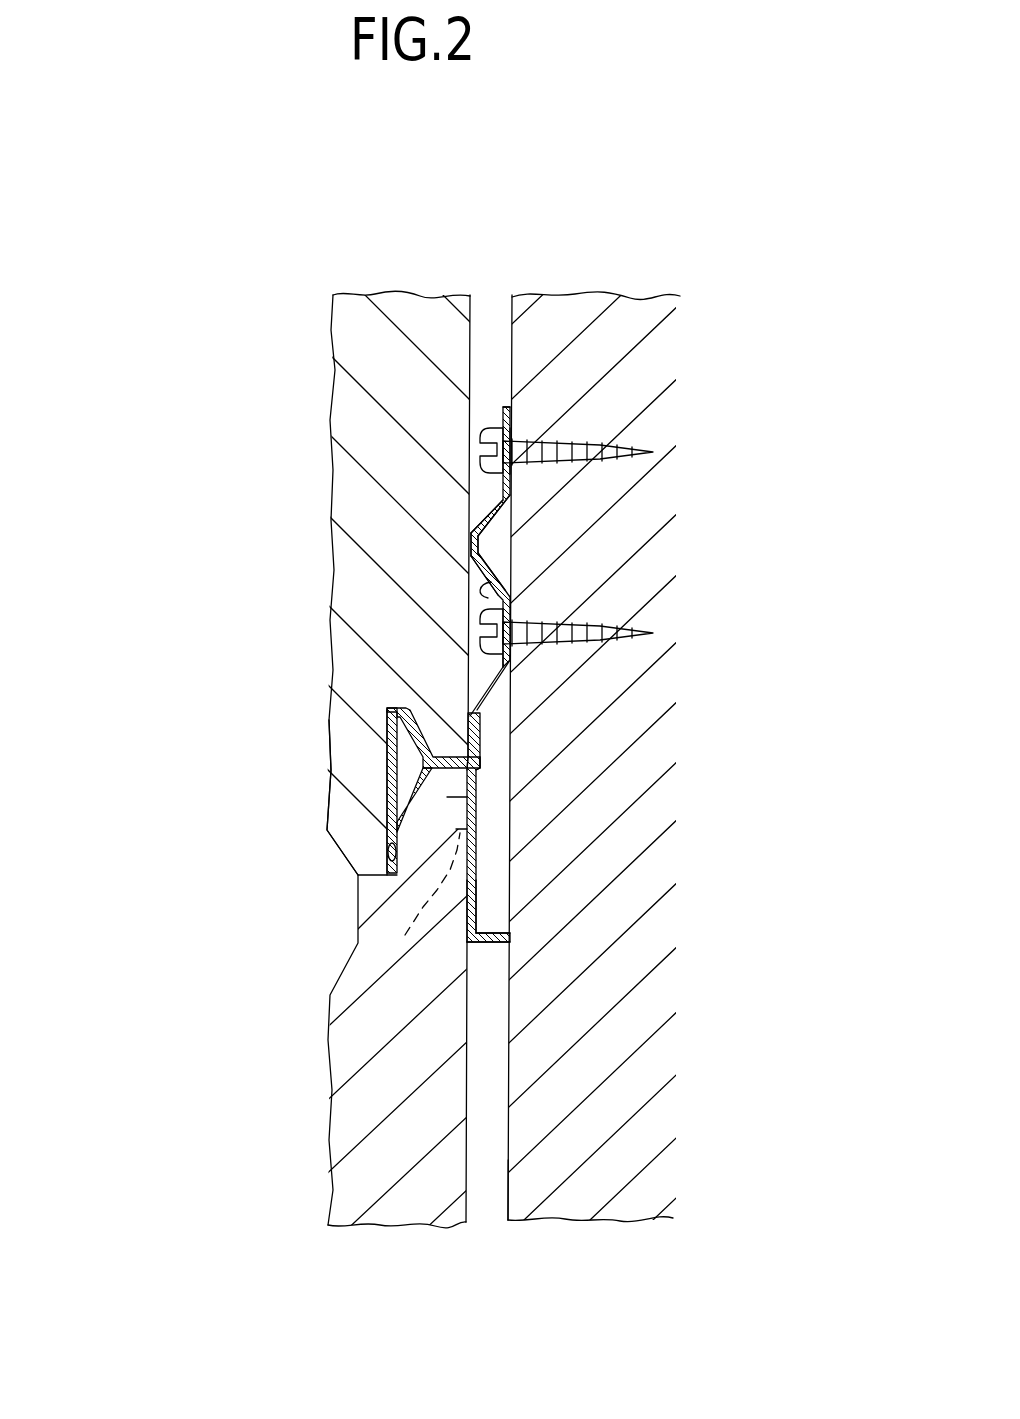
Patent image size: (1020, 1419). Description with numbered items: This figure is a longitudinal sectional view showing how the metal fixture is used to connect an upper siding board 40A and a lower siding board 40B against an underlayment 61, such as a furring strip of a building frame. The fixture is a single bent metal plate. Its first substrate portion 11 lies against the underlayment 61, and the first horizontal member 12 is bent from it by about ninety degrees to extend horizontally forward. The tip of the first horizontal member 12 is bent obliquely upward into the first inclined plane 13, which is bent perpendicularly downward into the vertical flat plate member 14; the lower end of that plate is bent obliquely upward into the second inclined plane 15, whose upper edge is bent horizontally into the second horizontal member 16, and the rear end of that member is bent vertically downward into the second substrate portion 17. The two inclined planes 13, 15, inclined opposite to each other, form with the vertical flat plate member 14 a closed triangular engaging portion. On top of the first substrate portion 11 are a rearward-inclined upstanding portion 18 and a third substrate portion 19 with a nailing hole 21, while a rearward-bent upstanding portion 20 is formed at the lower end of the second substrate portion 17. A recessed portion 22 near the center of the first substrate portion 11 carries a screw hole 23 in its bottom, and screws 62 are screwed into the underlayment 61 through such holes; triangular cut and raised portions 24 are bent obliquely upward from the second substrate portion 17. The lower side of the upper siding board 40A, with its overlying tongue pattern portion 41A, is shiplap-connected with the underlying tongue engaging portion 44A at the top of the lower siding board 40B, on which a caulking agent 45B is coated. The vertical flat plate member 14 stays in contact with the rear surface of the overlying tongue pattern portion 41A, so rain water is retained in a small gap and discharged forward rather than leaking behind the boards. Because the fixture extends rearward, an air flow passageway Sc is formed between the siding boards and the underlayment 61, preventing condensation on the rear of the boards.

The first substrate portion 11 is at (469, 565).
The first horizontal member 12 is at (480, 737).
The first inclined plane 13 is at (413, 718).
The vertical flat plate member 14 is at (387, 757).
The second inclined plane 15 is at (403, 807).
The second horizontal member 16 is at (480, 787).
The second substrate portion 17 is at (477, 899).
The upstanding portion 18 is at (475, 532).
The third substrate portion 19 is at (503, 407).
The upstanding portion 20 is at (483, 943).
The nailing hole 21 is at (515, 432).
The recessed portion 22 is at (506, 582).
The screw hole 23 is at (511, 653).
The cut and raised portion 24 is at (419, 910).
The upper siding board 40A is at (300, 391).
The lower siding board 40B is at (272, 1182).
The overlying tongue pattern portion 41A is at (333, 817).
The underlying tongue engaging portion 44A is at (447, 797).
The caulking agent 45B is at (387, 852).
The underlayment 61 is at (640, 940).
The screw 62 is at (603, 437).
The air flow passageway Sc is at (482, 1188).